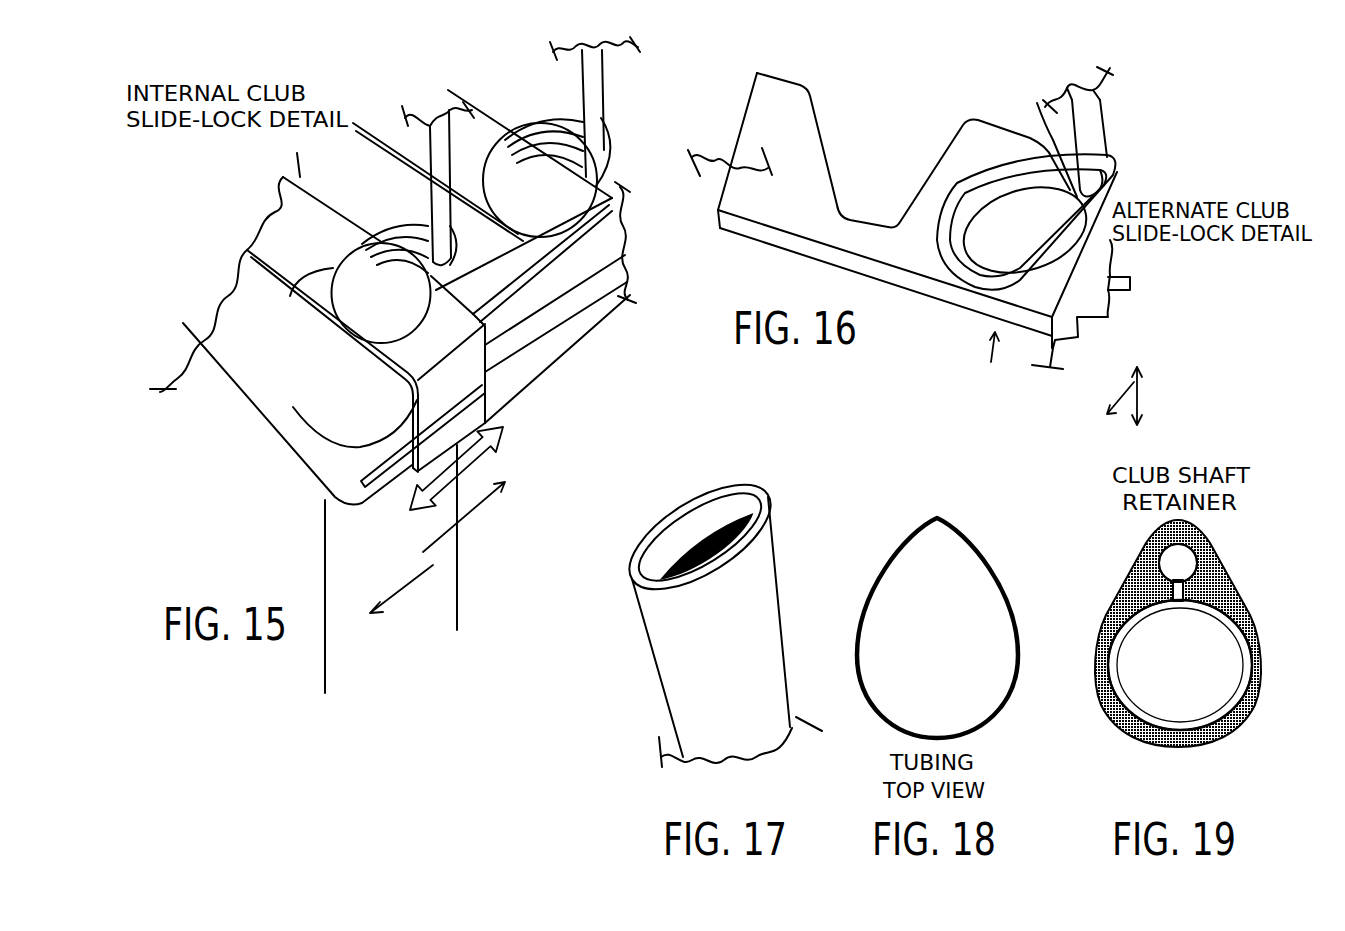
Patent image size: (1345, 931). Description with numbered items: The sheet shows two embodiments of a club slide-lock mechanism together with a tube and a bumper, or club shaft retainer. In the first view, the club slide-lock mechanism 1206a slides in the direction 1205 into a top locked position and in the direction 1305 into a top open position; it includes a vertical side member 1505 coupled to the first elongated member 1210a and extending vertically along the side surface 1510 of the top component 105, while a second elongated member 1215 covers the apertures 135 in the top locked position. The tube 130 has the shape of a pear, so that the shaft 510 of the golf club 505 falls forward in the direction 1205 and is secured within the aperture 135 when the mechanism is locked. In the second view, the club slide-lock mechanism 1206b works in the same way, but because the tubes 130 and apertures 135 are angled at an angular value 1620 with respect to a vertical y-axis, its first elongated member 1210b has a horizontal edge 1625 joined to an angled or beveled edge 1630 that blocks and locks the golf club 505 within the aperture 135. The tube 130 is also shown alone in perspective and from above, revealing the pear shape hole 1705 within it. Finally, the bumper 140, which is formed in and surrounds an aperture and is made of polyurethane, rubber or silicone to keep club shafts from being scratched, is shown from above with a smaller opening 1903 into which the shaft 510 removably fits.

In FIG. 15, the top component 105 is at (565, 325).
In FIG. 15, the tube 130 is at (285, 288).
In FIG. 16, the tube 130 is at (970, 180).
In FIG. 17, the tube 130 is at (673, 677).
In FIG. 18, the tube 130 is at (868, 593).
In FIG. 15, the aperture 135 is at (370, 308).
In FIG. 16, the aperture 135 is at (998, 252).
In FIG. 19, the bumper (club shaft retainer) 140 is at (1132, 560).
In FIG. 15, the golf club 505 is at (437, 221).
In FIG. 16, the golf club 505 is at (1090, 112).
In FIG. 15, the shaft 510 is at (443, 200).
In FIG. 15, the direction 1205 is at (480, 503).
In FIG. 15, the club slide-lock mechanism 1206a is at (480, 368).
In FIG. 16, the club slide-lock mechanism 1206b is at (984, 358).
In FIG. 15, the first elongated member 1210a is at (280, 243).
In FIG. 16, the first elongated member 1210b is at (1057, 283).
In FIG. 15, the second elongated member 1215 is at (605, 207).
In FIG. 15, the direction 1305 is at (396, 587).
In FIG. 15, the vertical side member 1505 is at (431, 400).
In FIG. 16, the vertical side member 1505 is at (1119, 281).
In FIG. 15, the side surface 1510 is at (388, 447).
In FIG. 16, the angular value 1620 is at (1127, 408).
In FIG. 16, the horizontal edge 1625 is at (1006, 127).
In FIG. 16, the angled (or beveled) edge 1630 is at (1037, 103).
In FIG. 17, the pear shape hole 1705 is at (708, 513).
In FIG. 18, the pear shape hole 1705 is at (937, 558).
In FIG. 19, the retainer hole 1903 is at (1182, 565).